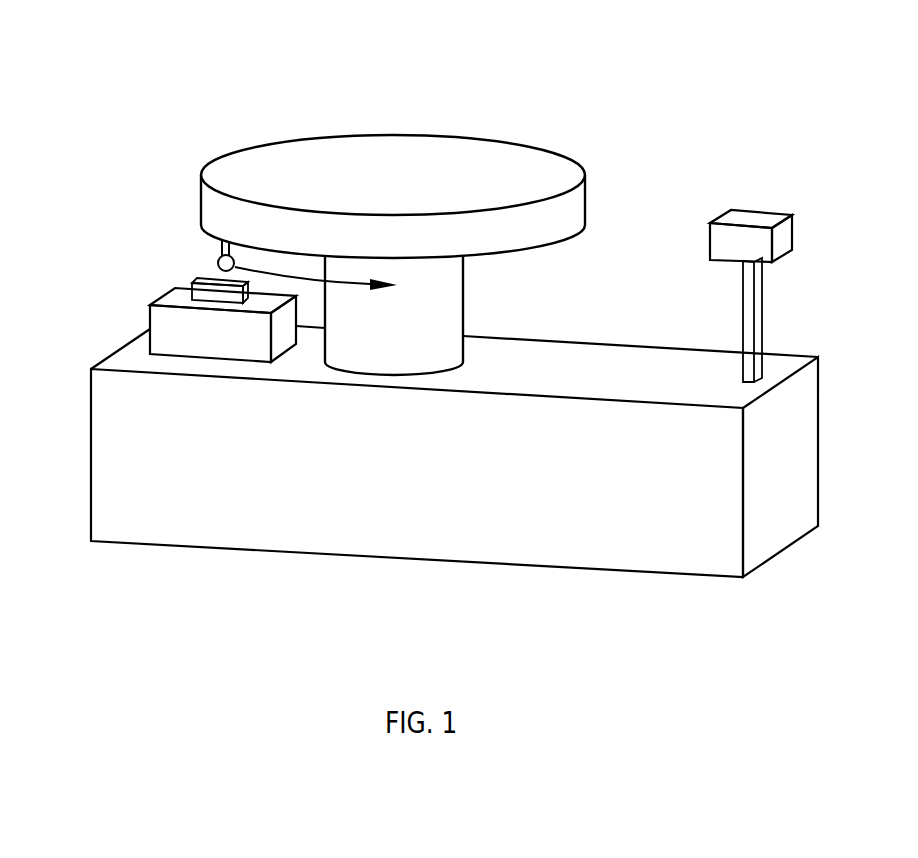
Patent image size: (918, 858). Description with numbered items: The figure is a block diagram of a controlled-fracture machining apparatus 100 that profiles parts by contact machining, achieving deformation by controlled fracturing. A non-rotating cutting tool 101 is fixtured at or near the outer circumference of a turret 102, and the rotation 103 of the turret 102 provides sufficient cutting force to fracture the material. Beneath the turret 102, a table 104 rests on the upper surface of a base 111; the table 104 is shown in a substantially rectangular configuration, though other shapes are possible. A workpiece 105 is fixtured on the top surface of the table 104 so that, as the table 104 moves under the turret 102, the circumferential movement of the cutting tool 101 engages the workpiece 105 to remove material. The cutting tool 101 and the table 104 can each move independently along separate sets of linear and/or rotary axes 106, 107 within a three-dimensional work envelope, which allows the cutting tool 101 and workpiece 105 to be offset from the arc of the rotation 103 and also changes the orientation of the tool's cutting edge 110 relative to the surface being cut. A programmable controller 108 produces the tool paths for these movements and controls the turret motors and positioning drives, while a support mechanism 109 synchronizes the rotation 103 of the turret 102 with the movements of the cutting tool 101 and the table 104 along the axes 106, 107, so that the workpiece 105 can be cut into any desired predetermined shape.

The controlled-fracture machining apparatus 100 is at (160, 62).
The non-rotating cutting tool 101 is at (222, 247).
The turret 102 is at (228, 170).
The rotation 103 is at (352, 282).
The table 104 is at (160, 319).
The workpiece 105 is at (192, 292).
The linear and/or rotary axes 106 is at (212, 210).
The linear and/or rotary axes 107 is at (110, 415).
The programmable controller 108 is at (757, 210).
The support mechanism 109 is at (448, 302).
The cutting edge 110 is at (217, 267).
The base 111 is at (110, 493).